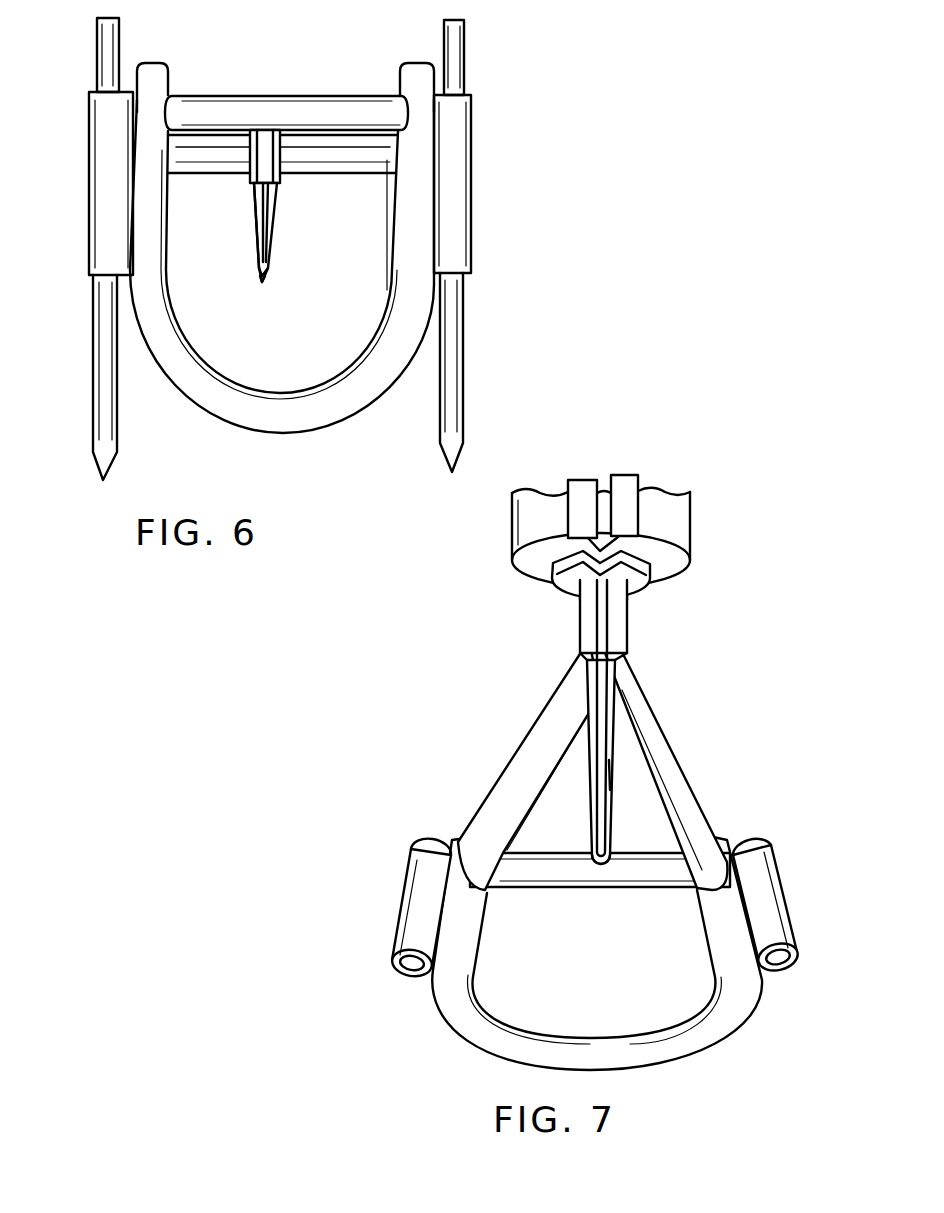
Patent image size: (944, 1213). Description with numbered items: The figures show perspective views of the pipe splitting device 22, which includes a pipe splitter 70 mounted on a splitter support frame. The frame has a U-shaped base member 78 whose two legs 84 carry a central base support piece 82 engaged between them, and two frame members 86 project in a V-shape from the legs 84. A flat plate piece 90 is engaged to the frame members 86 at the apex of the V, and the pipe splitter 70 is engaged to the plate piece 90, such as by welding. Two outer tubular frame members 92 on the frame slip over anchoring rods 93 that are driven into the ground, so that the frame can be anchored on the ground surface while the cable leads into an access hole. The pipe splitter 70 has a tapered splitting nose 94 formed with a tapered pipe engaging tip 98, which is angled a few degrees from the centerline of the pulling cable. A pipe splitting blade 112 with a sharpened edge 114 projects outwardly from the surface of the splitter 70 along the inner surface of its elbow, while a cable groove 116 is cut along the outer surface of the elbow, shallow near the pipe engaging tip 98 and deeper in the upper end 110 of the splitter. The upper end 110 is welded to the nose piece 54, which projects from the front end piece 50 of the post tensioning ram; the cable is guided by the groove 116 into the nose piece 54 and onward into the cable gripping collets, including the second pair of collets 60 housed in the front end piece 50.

In FIG. 6, the pipe splitting device 22 is at (285, 252).
In FIG. 7, the pipe splitting device 22 is at (597, 757).
In FIG. 7, the front end piece 50 is at (628, 515).
In FIG. 7, the nose piece 54 is at (656, 590).
In FIG. 7, the second pair of collets 60 is at (623, 492).
In FIG. 6, the pipe splitter 70 is at (270, 177).
In FIG. 7, the pipe splitter 70 is at (605, 620).
In FIG. 6, the U-shaped base member 78 is at (285, 396).
In FIG. 7, the U-shaped base member 78 is at (600, 1037).
In FIG. 6, the central base support piece 82 is at (295, 106).
In FIG. 7, the central base support piece 82 is at (627, 884).
In FIG. 6, the legs 84 is at (172, 88).
In FIG. 6, the frame members 86 is at (190, 163).
In FIG. 7, the frame members 86 is at (532, 757).
In FIG. 6, the flat plate piece 90 is at (268, 163).
In FIG. 6, the outer tubular frame members 92 is at (100, 171).
In FIG. 7, the outer tubular frame members 92 is at (413, 897).
In FIG. 6, the anchoring rods 93 is at (103, 347).
In FIG. 6, the tapered splitting nose 94 is at (261, 255).
In FIG. 7, the tapered splitting nose 94 is at (641, 758).
In FIG. 6, the tapered pipe engaging tip 98 is at (271, 266).
In FIG. 7, the tapered pipe engaging tip 98 is at (592, 853).
In FIG. 7, the upper end 110 is at (581, 612).
In FIG. 6, the pipe splitting blade 112 is at (253, 237).
In FIG. 6, the sharpened edge 114 is at (266, 227).
In FIG. 6, the cable groove 116 is at (262, 284).
In FIG. 7, the cable groove 116 is at (613, 772).